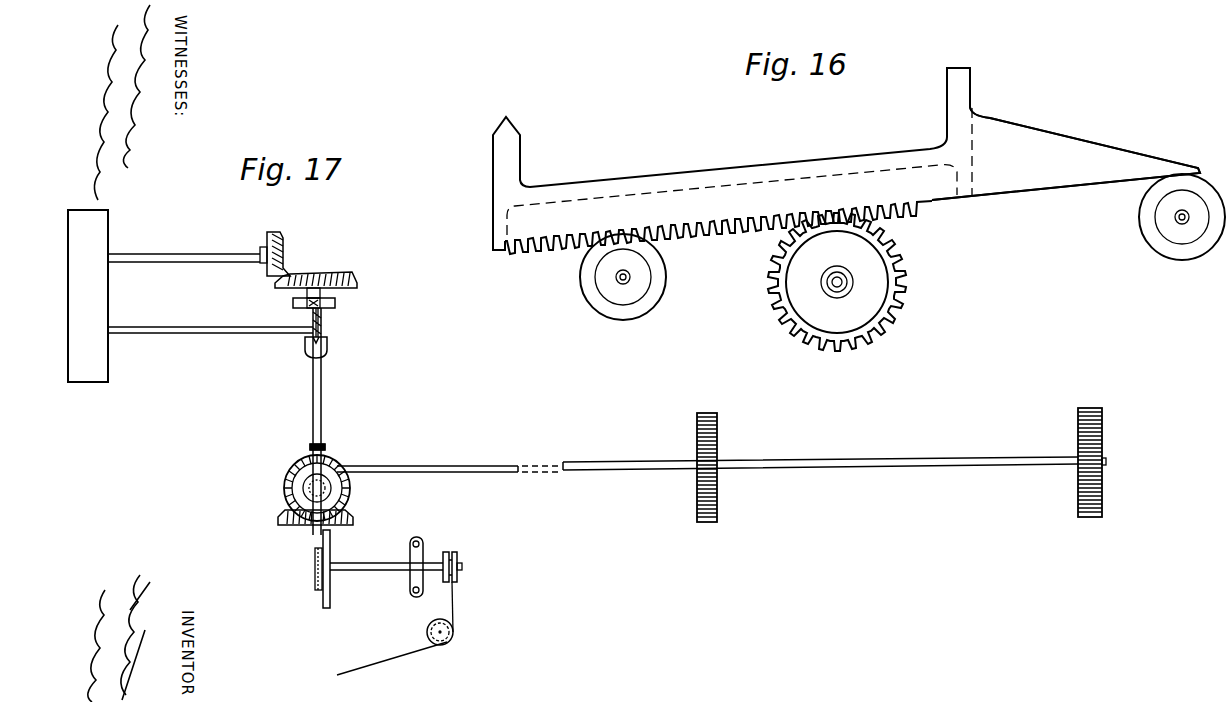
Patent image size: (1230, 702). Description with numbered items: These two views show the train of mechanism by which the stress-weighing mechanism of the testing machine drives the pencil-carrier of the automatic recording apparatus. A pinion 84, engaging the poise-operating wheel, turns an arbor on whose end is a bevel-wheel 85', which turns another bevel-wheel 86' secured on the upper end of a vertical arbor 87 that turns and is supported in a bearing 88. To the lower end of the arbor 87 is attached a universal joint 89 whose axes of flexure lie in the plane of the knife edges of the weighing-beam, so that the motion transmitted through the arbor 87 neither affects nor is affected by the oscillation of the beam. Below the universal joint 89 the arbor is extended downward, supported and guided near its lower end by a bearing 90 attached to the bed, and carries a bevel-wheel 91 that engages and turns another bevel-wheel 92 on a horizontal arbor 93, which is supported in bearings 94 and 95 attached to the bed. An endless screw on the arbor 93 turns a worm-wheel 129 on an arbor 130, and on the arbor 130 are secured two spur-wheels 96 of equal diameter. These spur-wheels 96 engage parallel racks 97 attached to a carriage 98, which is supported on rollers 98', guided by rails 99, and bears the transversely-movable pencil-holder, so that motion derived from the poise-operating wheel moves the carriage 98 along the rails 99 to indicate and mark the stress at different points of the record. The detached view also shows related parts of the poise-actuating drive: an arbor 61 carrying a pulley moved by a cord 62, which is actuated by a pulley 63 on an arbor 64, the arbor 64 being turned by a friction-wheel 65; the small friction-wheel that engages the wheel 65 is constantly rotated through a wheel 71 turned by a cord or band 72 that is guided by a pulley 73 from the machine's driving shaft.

In FIG. 16, the carriage 98 is at (846, 159).
In FIG. 16, the parallel racks 97 is at (548, 250).
In FIG. 16, the rails 99 is at (1125, 186).
In FIG. 16, the rollers 98' is at (902, 247).
In FIG. 16, the spur-wheels 96 is at (837, 282).
In FIG. 17, the spur-wheels 96 is at (717, 447).
In FIG. 16, the arbor 130 is at (845, 288).
In FIG. 17, the arbor 130 is at (472, 466).
In FIG. 17, the pinion 84 is at (188, 255).
In FIG. 17, the bevel-wheel 85' is at (260, 247).
In FIG. 17, the bevel-wheel 86' is at (335, 285).
In FIG. 17, the vertical arbor 87 is at (335, 304).
In FIG. 17, the bearing 88 is at (296, 304).
In FIG. 17, the cord 62 is at (318, 405).
In FIG. 17, the arbor 61 is at (185, 331).
In FIG. 17, the universal joint 89 is at (327, 350).
In FIG. 17, the bearing 90 is at (325, 447).
In FIG. 17, the worm-wheel 129 is at (310, 449).
In FIG. 17, the bevel-wheel 92 is at (348, 498).
In FIG. 17, the bearing 94 is at (284, 480).
In FIG. 17, the horizontal arbor 93 is at (286, 512).
In FIG. 17, the bevel-wheel 91 is at (344, 524).
In FIG. 17, the bearing 95 is at (352, 505).
In FIG. 17, the pulley 63 is at (318, 586).
In FIG. 17, the friction-wheel 65 is at (318, 591).
In FIG. 17, the arbor 64 is at (396, 571).
In FIG. 17, the wheel 71 is at (460, 556).
In FIG. 17, the pulley 73 is at (454, 643).
In FIG. 17, the cord or band 72 is at (368, 668).